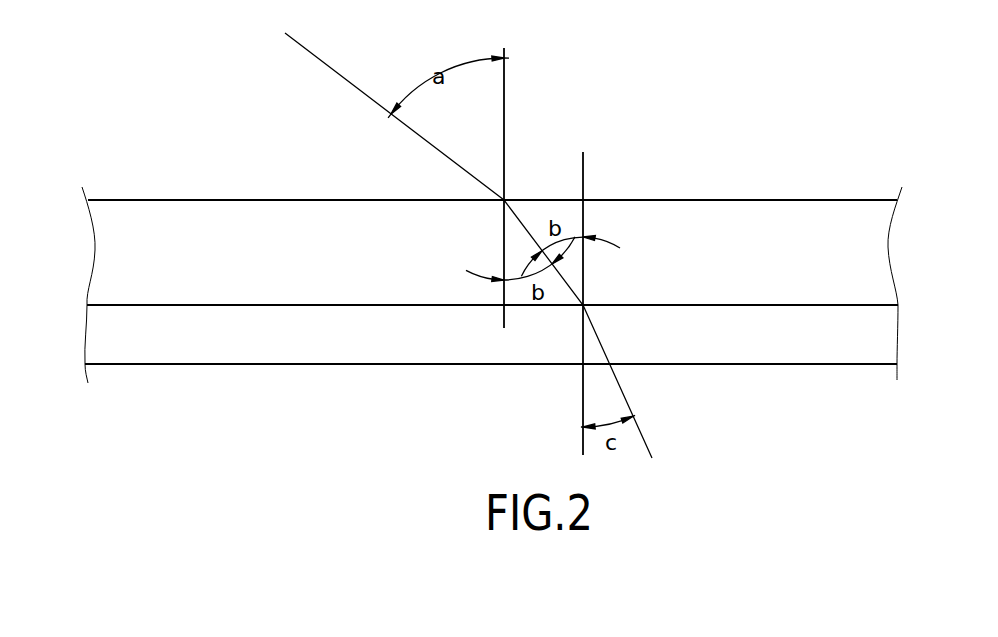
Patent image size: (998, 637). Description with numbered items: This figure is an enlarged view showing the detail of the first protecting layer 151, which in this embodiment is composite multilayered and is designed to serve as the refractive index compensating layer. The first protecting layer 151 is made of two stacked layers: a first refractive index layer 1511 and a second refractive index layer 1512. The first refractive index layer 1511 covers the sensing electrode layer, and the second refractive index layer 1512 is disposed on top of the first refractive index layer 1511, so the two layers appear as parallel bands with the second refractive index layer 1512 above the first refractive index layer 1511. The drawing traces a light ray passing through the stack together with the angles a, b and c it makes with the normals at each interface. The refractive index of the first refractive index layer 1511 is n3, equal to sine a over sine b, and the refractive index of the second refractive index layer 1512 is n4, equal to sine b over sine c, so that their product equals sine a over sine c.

The first protecting layer 151 is at (842, 132).
The second refractive index layer 1512 is at (885, 248).
The first refractive index layer 1511 is at (877, 333).